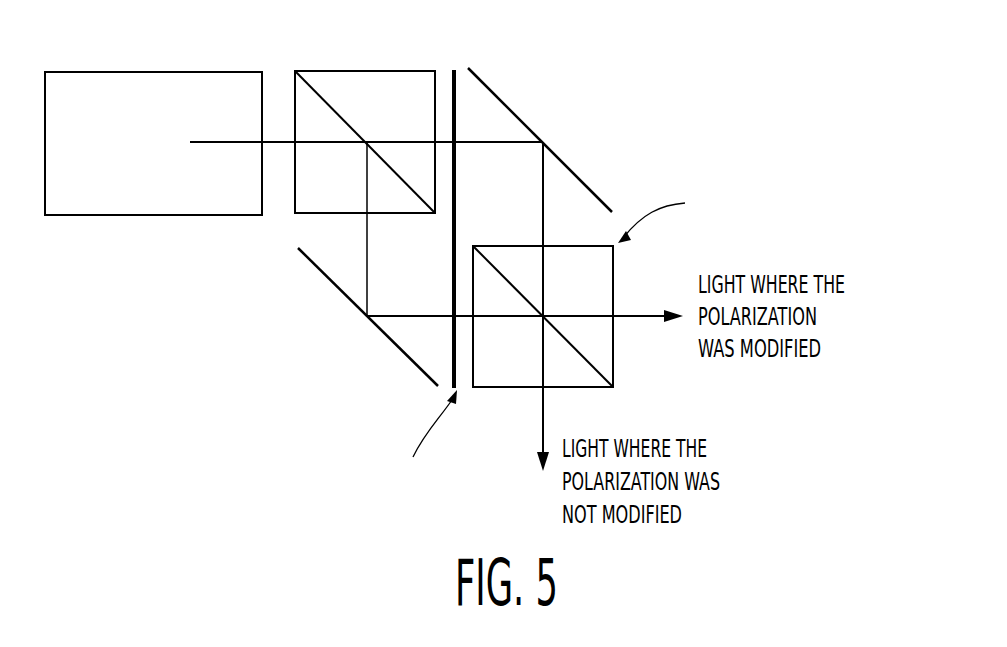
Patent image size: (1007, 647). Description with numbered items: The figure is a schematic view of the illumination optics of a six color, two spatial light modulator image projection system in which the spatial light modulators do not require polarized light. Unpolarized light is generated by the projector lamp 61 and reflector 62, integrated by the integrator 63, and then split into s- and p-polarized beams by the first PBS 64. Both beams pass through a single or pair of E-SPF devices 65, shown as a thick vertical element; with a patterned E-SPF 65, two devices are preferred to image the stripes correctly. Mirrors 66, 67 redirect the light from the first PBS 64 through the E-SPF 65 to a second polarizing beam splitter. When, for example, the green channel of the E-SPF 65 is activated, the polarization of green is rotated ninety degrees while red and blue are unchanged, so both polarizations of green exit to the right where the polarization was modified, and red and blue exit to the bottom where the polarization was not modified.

The projector lamp 61 is at (153, 170).
The reflector 62 is at (65, 215).
The integrator 63 is at (613, 283).
The first PBS 64 is at (410, 70).
The E-SPF device 65 is at (457, 378).
The mirror 66 is at (397, 353).
The mirror 67 is at (568, 165).